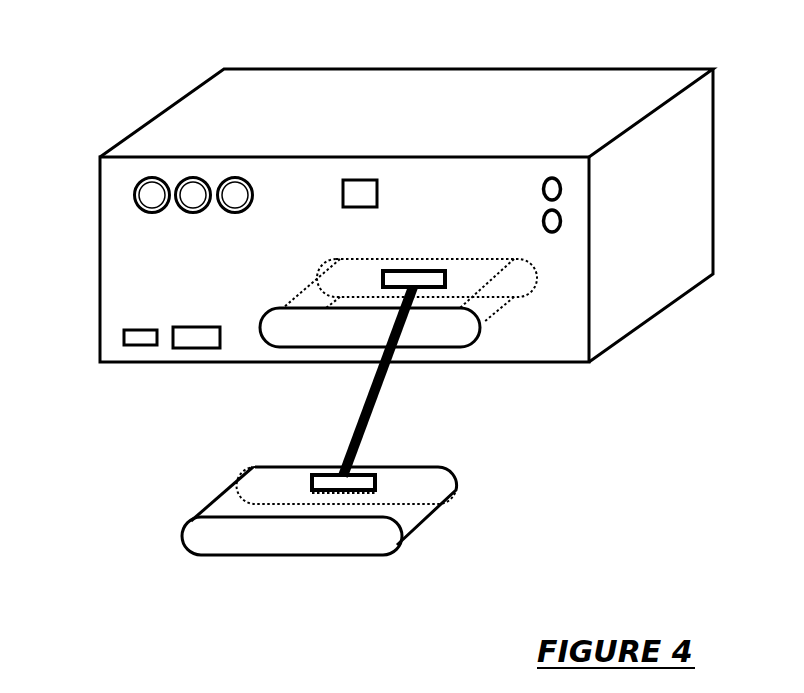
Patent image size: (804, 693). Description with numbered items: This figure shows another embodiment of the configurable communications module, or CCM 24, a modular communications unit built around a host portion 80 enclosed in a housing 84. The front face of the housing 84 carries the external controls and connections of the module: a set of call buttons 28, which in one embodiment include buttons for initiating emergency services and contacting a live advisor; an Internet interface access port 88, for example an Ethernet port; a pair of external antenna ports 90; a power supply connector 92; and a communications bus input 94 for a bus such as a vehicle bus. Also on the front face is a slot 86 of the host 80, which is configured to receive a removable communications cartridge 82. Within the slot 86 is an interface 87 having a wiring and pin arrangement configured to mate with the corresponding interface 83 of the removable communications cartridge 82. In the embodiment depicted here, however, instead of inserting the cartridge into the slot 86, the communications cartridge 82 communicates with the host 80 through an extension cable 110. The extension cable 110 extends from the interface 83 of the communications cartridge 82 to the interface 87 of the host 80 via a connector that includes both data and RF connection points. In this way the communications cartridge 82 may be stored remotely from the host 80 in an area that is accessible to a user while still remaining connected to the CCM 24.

The configurable communications module (CCM) 24 is at (106, 122).
The call buttons 28 is at (147, 212).
The host portion 80 is at (617, 323).
The removable communications cartridge 82 is at (184, 530).
The interface of the removable communications cartridge 83 is at (310, 492).
The housing 84 is at (677, 78).
The slot 86 is at (267, 314).
The interface 87 is at (404, 268).
The Internet interface access port 88 is at (343, 190).
The external antenna ports 90 is at (543, 187).
The power supply connector 92 is at (133, 330).
The communications bus input 94 is at (188, 327).
The extension cable 110 is at (378, 412).